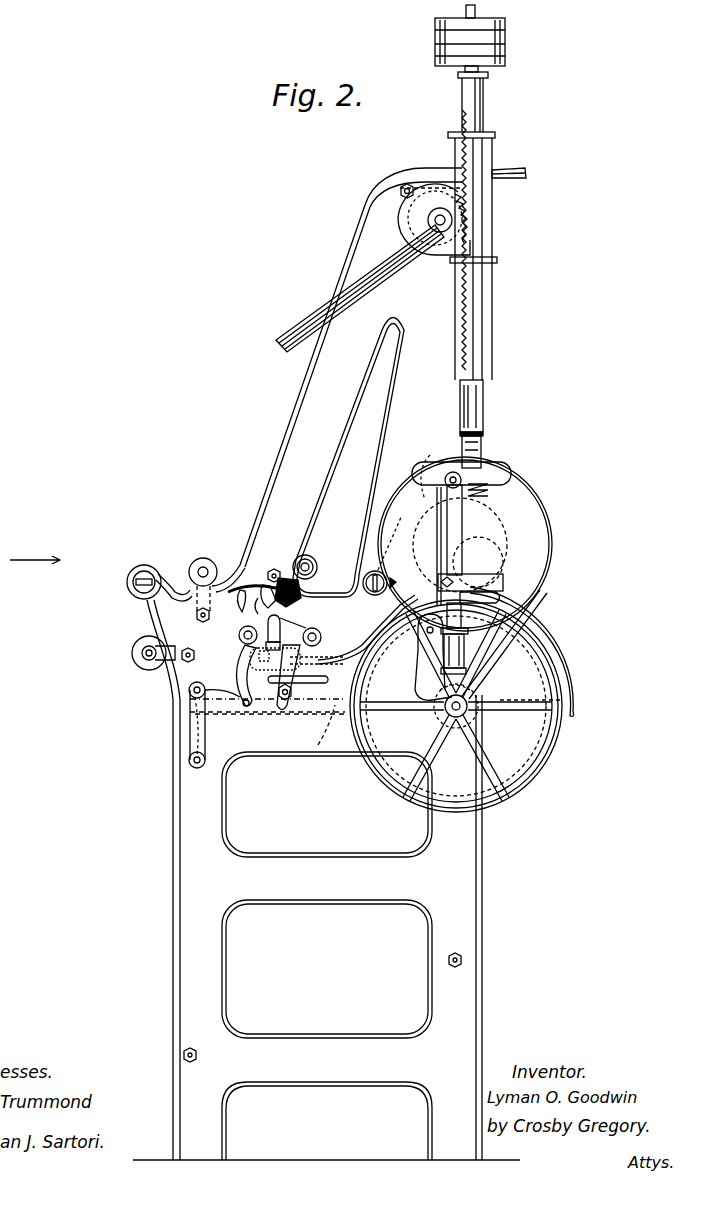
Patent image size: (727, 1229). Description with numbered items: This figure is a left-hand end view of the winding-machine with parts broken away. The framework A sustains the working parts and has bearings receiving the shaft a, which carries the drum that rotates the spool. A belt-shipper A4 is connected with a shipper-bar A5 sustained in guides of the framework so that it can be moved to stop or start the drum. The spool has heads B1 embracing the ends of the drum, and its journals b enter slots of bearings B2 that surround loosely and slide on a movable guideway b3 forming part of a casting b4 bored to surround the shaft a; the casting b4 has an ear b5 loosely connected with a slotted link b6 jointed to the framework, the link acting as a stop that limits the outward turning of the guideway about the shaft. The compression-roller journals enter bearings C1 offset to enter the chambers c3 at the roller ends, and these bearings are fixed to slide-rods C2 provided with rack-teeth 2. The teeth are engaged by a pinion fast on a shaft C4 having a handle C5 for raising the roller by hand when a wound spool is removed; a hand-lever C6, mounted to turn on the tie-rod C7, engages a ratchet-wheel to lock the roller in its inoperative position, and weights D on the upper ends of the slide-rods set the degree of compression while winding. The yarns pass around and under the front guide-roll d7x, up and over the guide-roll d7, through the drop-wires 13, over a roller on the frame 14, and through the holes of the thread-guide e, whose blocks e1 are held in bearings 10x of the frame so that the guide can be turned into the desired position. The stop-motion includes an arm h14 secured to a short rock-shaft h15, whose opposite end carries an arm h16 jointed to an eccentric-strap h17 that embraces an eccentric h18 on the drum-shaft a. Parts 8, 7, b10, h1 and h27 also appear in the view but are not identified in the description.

The framework A is at (326, 877).
The rail 8 is at (163, 575).
The roller 7 is at (135, 590).
The guide-roll d7 is at (210, 560).
The front guide-roll d7x is at (138, 652).
The tie-rod C7 is at (400, 185).
The bearings 10x is at (372, 570).
The blocks e1 is at (362, 590).
The roller 14 is at (312, 565).
The thread-guide e is at (370, 593).
The pin b10 is at (392, 583).
The drop-wires 13 is at (278, 570).
The lever h1 is at (290, 570).
The shipper-bar A5 is at (262, 655).
The arm h14 is at (205, 728).
The short rock-shaft h15 is at (190, 760).
The arm h16 is at (190, 720).
The arm h27 is at (315, 743).
The weights D is at (507, 45).
The slide-rods C2 is at (486, 350).
The rack-teeth 2 is at (460, 303).
The hand-lever C6 is at (520, 173).
The shaft C4 is at (468, 222).
The bearings C1 is at (428, 222).
The handle C5 is at (340, 292).
The chambers c3 is at (505, 478).
The movable guideway b3 is at (462, 512).
The bearings B2 is at (500, 545).
The heads B1 is at (552, 542).
The journals b is at (482, 593).
The ear b5 is at (505, 584).
The casting b4 is at (470, 640).
The slotted link b6 is at (440, 645).
The belt-shipper A4 is at (572, 640).
The eccentric h18 is at (478, 695).
The eccentric-strap h17 is at (473, 696).
The shaft a is at (458, 720).